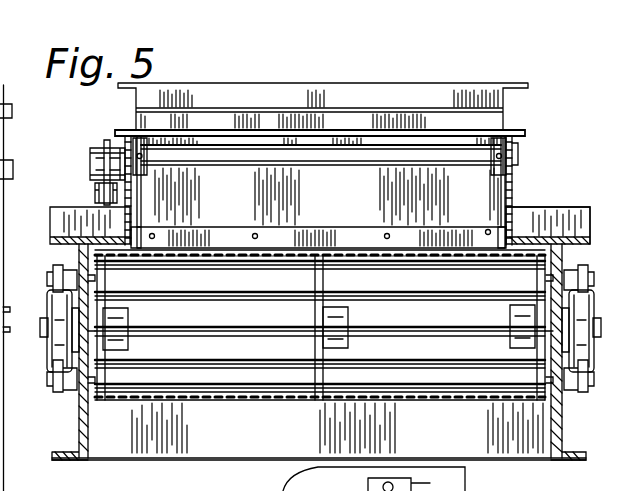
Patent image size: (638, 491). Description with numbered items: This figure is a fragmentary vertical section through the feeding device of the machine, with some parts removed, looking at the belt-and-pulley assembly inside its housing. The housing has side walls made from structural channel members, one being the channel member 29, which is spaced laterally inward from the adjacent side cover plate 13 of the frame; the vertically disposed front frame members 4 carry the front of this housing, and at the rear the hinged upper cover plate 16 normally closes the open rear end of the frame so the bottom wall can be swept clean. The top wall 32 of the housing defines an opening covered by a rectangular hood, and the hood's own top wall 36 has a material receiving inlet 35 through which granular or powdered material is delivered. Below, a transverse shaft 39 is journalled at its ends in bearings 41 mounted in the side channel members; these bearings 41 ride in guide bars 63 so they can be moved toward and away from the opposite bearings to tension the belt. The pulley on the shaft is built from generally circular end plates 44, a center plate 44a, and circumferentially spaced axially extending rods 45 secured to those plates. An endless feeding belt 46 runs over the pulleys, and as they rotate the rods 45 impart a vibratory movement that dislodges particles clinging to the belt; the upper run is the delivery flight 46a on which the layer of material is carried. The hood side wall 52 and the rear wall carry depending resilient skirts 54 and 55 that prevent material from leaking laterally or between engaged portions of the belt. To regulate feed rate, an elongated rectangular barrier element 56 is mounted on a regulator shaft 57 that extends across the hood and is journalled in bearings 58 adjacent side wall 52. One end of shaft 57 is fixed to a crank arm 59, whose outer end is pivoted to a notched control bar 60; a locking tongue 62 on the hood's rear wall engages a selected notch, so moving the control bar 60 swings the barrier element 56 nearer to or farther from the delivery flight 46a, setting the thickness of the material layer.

The front frame member 4 is at (4, 476).
The side cover plate 13 is at (4, 213).
The upper cover plate 16 is at (213, 450).
The side wall channel member 29 is at (79, 435).
The top wall 32 is at (531, 233).
The material receiving inlet 35 is at (348, 123).
The top wall of hood 36 is at (476, 128).
The transverse shaft 39 is at (40, 330).
The bearing 41 is at (52, 350).
The end plate 44 is at (108, 283).
The center plate 44a is at (355, 350).
The rod 45 is at (268, 278).
The feeding belt 46 is at (378, 268).
The delivery flight 46a is at (428, 268).
The side wall 52 is at (513, 193).
The resilient skirt 54 is at (140, 248).
The resilient skirt 55 is at (217, 248).
The barrier element 56 is at (383, 199).
The regulator shaft 57 is at (311, 155).
The bearing 58 is at (104, 145).
The crank arm 59 is at (104, 170).
The control bar 60 is at (95, 192).
The locking tongue 62 is at (91, 158).
The guide bar 63 is at (50, 277).